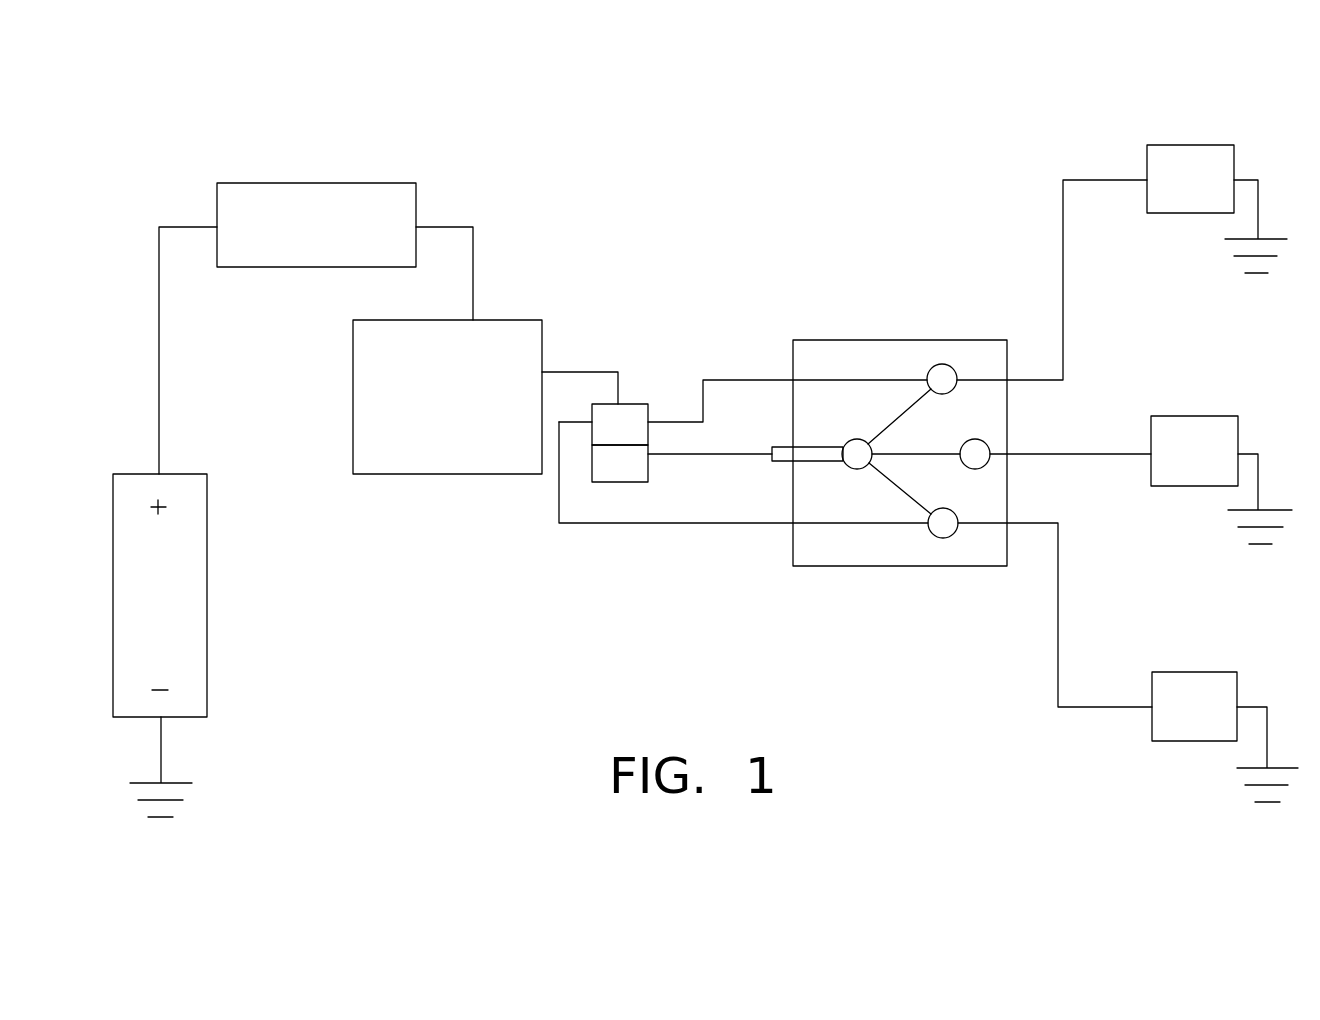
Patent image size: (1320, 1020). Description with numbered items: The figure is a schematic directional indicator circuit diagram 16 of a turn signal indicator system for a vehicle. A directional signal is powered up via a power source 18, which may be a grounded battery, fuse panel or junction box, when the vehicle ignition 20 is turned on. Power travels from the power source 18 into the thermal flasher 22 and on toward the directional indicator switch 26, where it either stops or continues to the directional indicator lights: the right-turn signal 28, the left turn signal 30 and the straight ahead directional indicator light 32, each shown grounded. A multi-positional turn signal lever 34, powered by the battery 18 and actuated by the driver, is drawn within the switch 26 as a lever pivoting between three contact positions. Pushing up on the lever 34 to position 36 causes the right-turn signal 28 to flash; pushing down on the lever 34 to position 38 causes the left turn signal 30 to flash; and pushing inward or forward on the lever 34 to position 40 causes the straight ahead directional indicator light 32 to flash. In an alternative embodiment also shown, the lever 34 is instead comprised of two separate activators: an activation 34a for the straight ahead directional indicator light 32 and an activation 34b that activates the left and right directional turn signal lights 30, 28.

The directional indicator circuit diagram 16 is at (730, 190).
The power source 18 is at (208, 592).
The vehicle ignition 20 is at (313, 183).
The thermal flasher 22 is at (353, 393).
The directional indicator switch 26 is at (828, 340).
The right-turn signal 28 is at (1181, 145).
The left turn signal 30 is at (1190, 672).
The straight ahead directional indicator light 32 is at (1185, 416).
The turn signal lever 34 is at (810, 462).
The activation for the straight ahead directional indicator light 34a is at (620, 482).
The activation for the left and right directional turn signal lights 34b is at (637, 404).
The lever position for right turn 36 is at (942, 364).
The lever position for left turn 38 is at (945, 538).
The lever position for straight ahead 40 is at (972, 440).